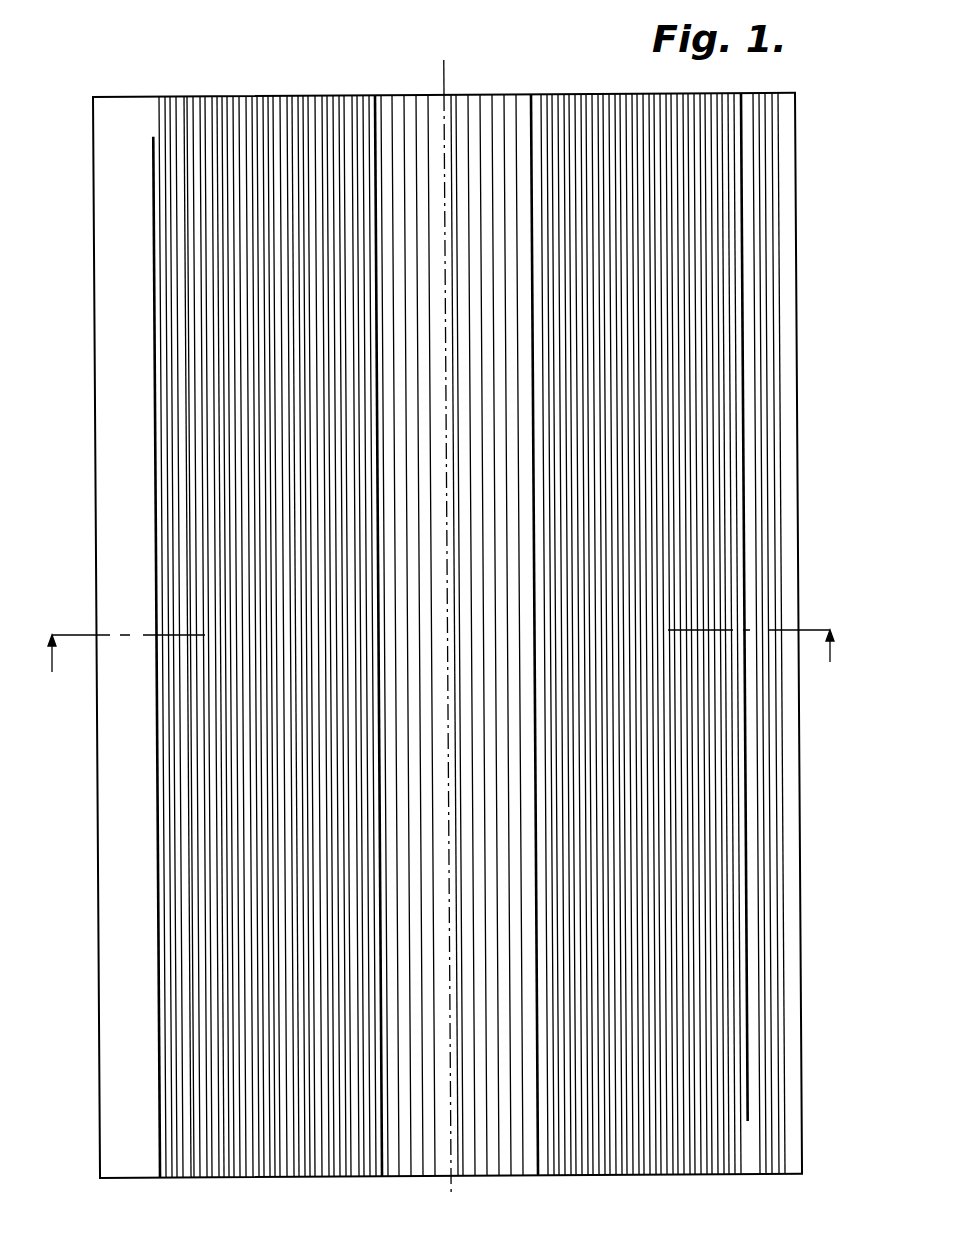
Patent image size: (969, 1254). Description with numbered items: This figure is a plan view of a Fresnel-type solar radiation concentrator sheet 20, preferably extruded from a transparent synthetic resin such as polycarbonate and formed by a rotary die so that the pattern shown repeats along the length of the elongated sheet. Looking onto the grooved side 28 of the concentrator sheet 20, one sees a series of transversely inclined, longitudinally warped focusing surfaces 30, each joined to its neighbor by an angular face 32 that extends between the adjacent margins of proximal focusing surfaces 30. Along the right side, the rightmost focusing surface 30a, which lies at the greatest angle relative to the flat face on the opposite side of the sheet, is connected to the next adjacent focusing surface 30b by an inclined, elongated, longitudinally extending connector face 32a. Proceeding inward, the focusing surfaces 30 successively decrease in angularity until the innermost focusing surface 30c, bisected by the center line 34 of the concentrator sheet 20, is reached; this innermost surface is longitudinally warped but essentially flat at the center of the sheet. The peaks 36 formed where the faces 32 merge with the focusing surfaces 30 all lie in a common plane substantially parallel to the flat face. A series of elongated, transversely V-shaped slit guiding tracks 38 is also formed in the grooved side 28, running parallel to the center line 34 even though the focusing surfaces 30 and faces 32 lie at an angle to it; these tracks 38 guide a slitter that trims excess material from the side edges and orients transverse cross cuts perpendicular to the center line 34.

The solar energy concentrator sheet 20 is at (88, 370).
The grooved side 28 is at (117, 803).
The focusing surfaces 30 is at (184, 102).
The angular faces 32 is at (217, 103).
The peaks 36 is at (292, 103).
The center line 34 is at (440, 83).
The innermost focusing surface 30c is at (449, 113).
The slit guiding tracks 38 is at (779, 238).
The rightmost focusing surface 30a is at (734, 390).
The connector face 32a is at (728, 458).
The next adjacent focusing surface 30b is at (722, 507).